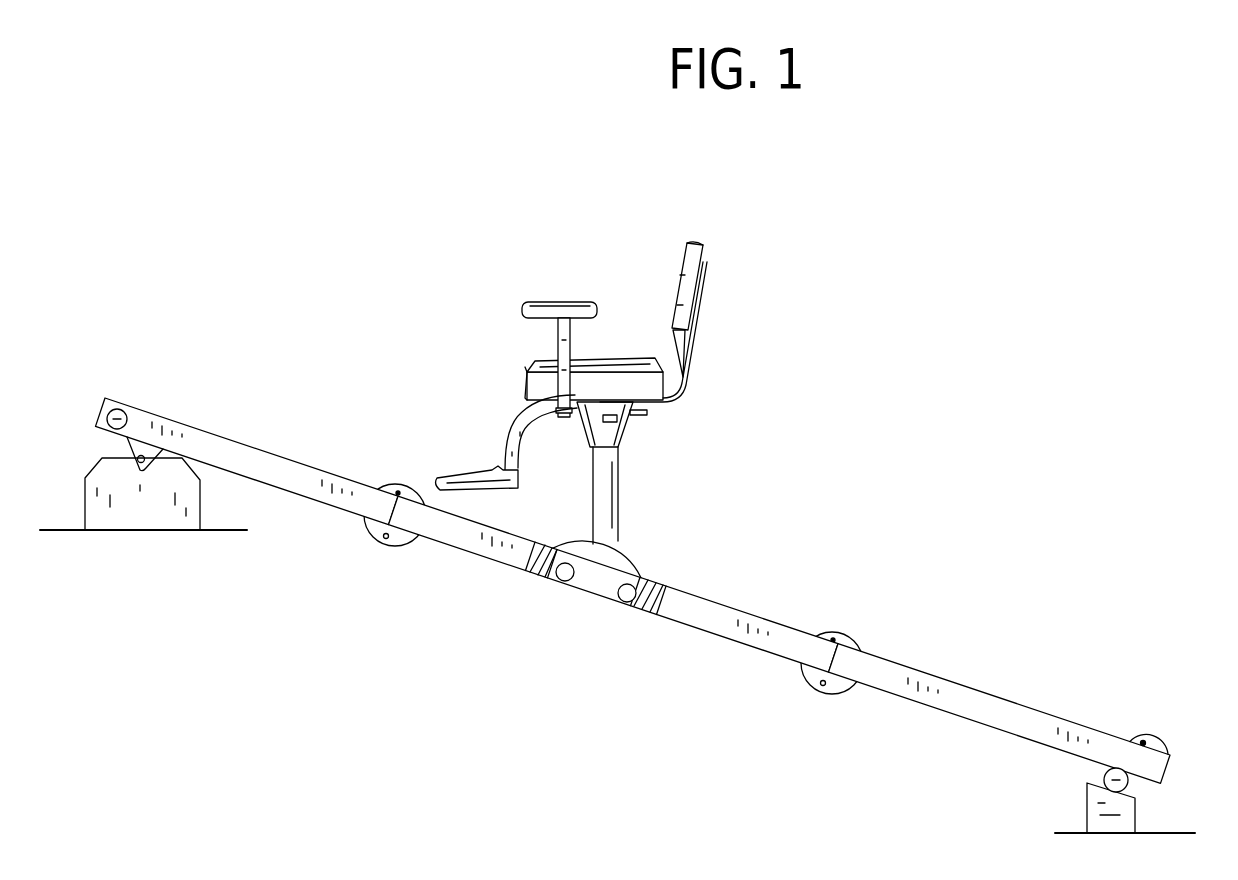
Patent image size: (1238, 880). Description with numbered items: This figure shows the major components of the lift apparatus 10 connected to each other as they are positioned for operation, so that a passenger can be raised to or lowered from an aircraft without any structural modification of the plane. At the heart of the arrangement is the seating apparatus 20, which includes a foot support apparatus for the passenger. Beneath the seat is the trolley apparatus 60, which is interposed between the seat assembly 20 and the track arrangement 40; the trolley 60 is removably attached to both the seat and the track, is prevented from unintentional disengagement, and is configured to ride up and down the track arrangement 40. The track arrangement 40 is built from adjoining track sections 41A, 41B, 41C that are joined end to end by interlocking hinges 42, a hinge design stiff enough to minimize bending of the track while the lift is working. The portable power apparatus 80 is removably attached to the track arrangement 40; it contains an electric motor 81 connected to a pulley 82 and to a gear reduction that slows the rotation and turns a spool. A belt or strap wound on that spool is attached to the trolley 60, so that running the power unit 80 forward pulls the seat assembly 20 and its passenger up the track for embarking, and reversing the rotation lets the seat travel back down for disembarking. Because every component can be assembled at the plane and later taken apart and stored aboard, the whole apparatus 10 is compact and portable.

The lift apparatus 10 is at (767, 318).
The seating apparatus 20 is at (615, 312).
The track arrangement 40 is at (1000, 628).
The first rail segment 41A is at (238, 442).
The second rail segment 41B is at (688, 626).
The third rail segment 41C is at (952, 714).
The interlocking hinges 42 is at (855, 640).
The trolley apparatus 60 is at (640, 535).
The power apparatus 80 is at (137, 567).
The electric motor 81 is at (230, 530).
The pulley 82 is at (1177, 832).